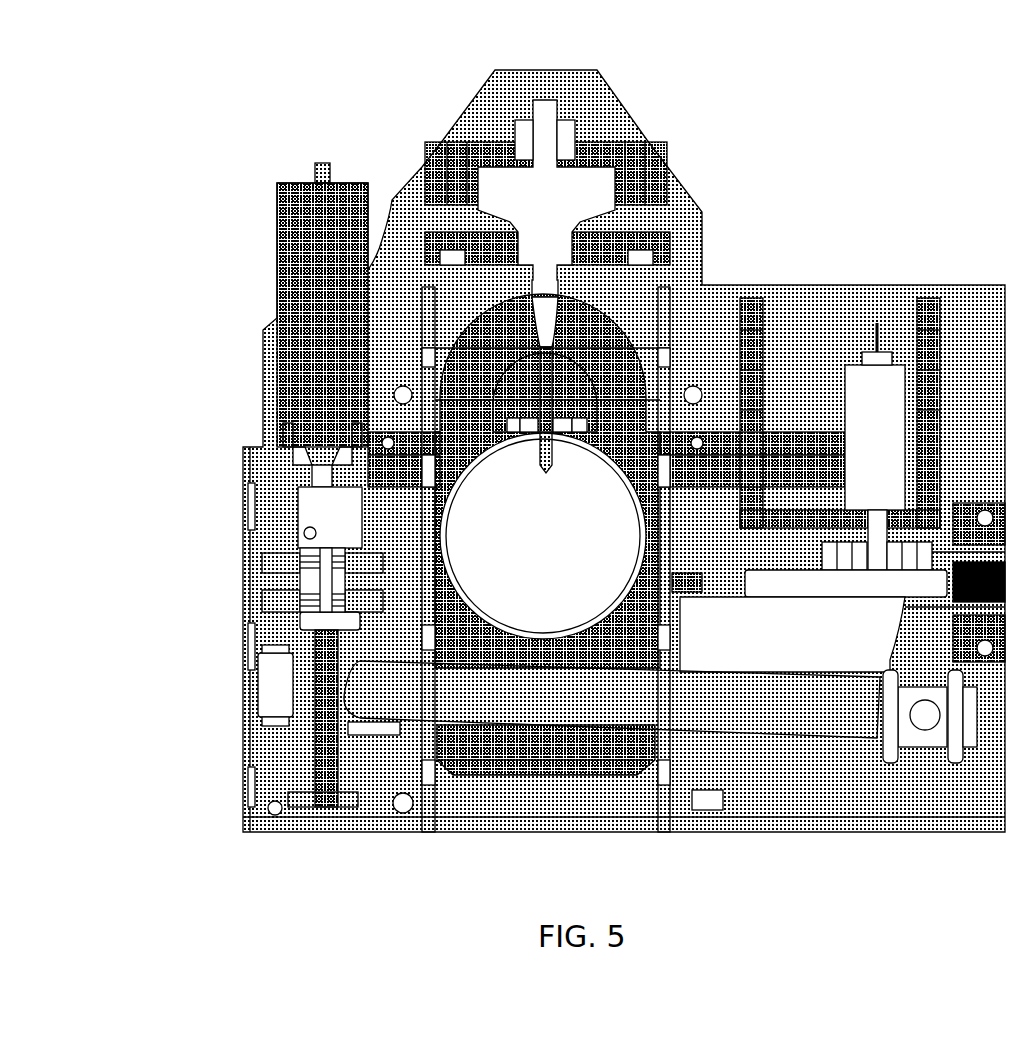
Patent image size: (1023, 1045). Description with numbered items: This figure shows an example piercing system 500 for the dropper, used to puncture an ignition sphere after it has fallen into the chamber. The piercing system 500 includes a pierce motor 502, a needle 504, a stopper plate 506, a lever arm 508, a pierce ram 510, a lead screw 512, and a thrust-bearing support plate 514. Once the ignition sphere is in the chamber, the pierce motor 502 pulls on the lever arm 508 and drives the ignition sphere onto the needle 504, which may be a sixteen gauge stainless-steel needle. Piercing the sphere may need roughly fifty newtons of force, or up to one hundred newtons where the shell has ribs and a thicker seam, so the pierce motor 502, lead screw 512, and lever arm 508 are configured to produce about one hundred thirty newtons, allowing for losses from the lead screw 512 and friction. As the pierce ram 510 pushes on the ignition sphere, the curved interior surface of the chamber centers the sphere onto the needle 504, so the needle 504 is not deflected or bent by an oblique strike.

The piercing system 500 is at (195, 57).
The pierce motor 502 is at (261, 271).
The needle 504 is at (571, 383).
The stopper plate 506 is at (601, 411).
The lever arm 508 is at (718, 730).
The pierce ram 510 is at (521, 771).
The lead screw 512 is at (296, 768).
The thrust-bearing support plate 514 is at (256, 571).